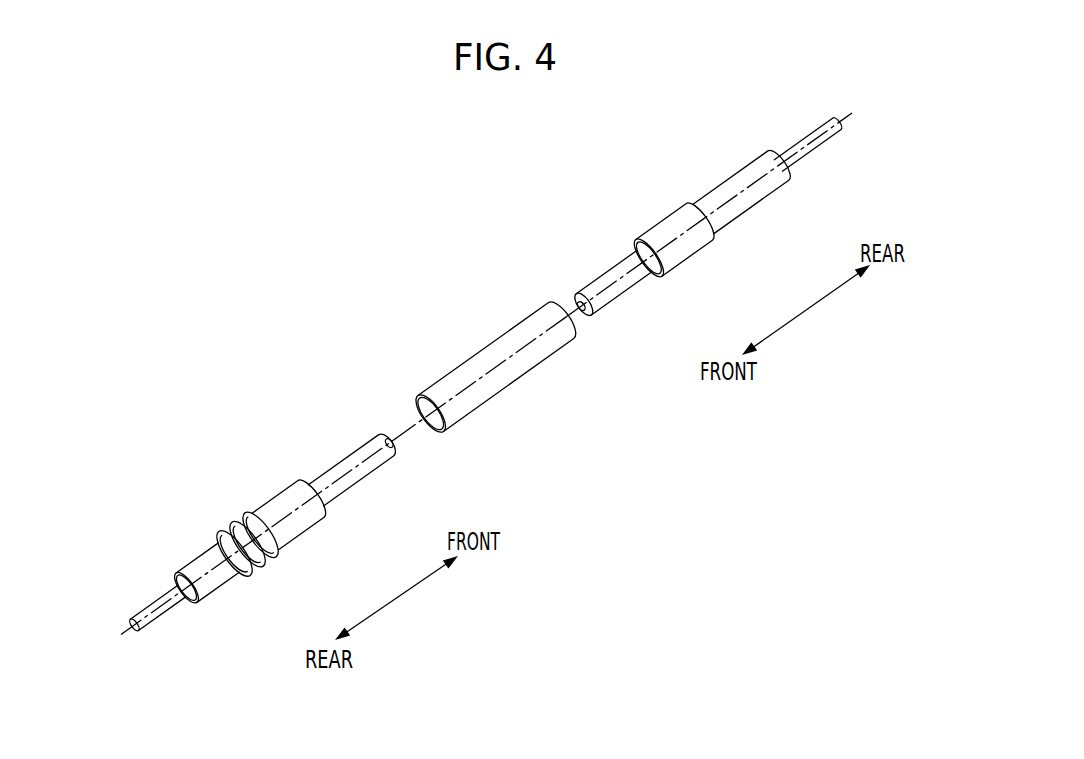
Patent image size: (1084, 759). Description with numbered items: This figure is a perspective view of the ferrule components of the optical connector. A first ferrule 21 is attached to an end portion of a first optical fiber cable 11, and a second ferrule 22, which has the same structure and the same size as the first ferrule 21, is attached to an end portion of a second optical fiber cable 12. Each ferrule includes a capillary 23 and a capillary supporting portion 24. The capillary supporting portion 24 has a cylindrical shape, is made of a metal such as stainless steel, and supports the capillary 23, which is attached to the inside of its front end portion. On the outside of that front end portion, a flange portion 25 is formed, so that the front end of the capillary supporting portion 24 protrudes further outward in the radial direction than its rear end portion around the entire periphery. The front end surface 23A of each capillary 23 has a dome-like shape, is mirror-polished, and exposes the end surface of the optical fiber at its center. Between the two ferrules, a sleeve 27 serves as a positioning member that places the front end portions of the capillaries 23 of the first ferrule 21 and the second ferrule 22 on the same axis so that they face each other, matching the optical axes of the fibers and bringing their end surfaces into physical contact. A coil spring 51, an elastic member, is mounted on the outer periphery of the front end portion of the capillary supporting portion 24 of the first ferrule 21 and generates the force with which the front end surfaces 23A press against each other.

The first optical fiber cable 11 is at (158, 593).
The second optical fiber cable 12 is at (805, 132).
The first ferrule 21 is at (250, 487).
The second ferrule 22 is at (748, 247).
The capillary 23 is at (350, 458).
The front end surface 23A is at (390, 433).
The capillary supporting portion 24 is at (200, 550).
The flange portion 25 is at (305, 525).
The sleeve 27 is at (482, 358).
The coil spring 51 is at (272, 553).